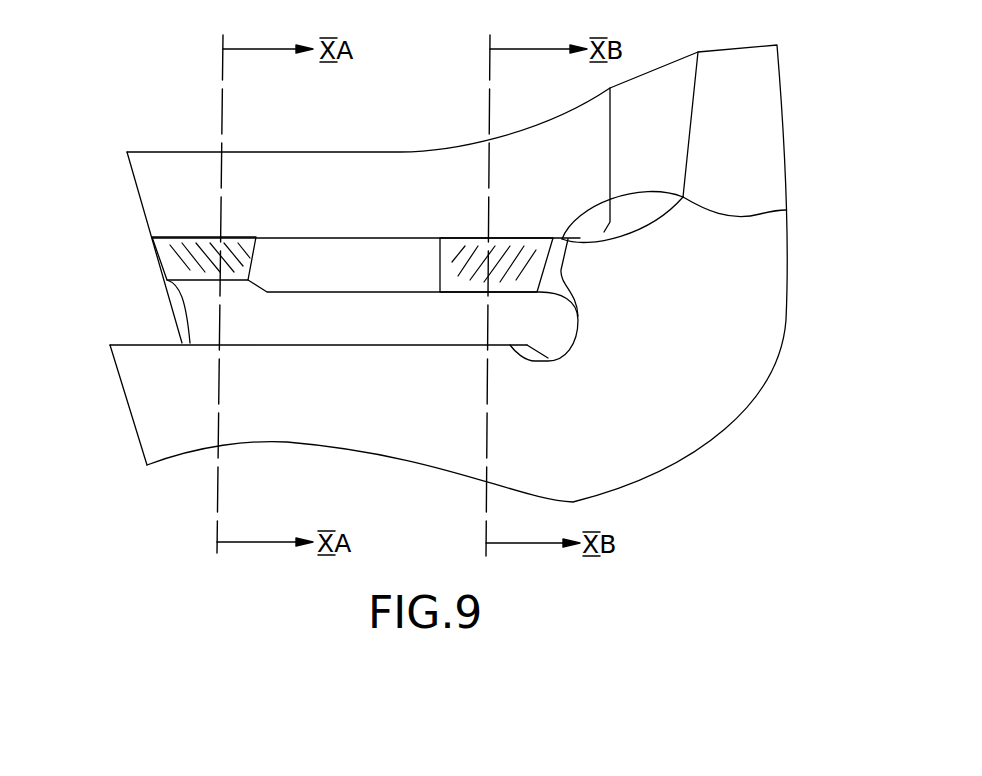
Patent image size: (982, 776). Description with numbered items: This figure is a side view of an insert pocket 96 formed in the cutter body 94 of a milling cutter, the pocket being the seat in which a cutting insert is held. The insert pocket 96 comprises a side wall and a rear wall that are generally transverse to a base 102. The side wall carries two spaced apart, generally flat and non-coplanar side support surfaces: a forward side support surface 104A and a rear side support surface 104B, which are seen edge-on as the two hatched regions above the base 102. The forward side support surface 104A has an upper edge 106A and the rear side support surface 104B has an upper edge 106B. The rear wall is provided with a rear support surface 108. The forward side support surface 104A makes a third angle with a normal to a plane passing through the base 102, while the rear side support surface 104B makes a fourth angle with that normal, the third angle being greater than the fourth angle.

The cutter body 94 is at (727, 392).
The insert pocket 96 is at (158, 293).
The base 102 is at (150, 343).
The forward side support surface 104A is at (166, 238).
The rear side support surface 104B is at (458, 238).
The upper edge of forward side support surface 106A is at (198, 238).
The upper edge of rear side support surface 106B is at (518, 238).
The rear support surface 108 is at (786, 210).